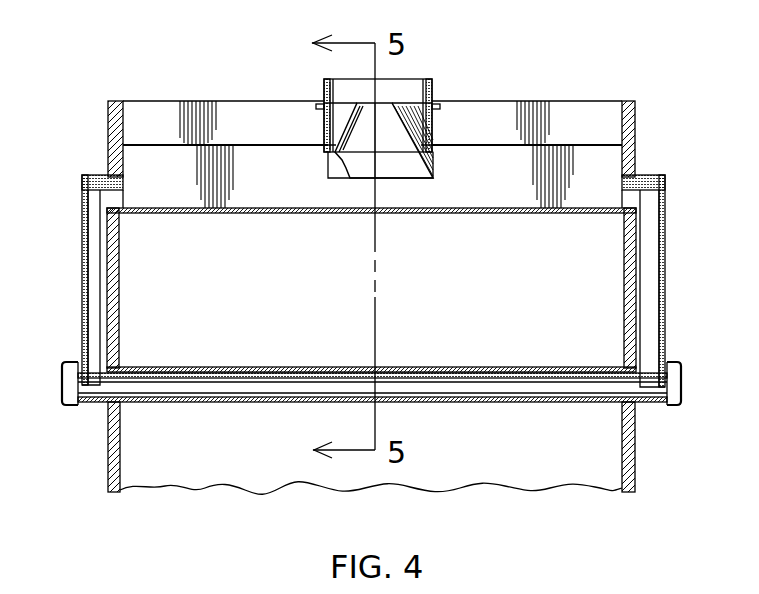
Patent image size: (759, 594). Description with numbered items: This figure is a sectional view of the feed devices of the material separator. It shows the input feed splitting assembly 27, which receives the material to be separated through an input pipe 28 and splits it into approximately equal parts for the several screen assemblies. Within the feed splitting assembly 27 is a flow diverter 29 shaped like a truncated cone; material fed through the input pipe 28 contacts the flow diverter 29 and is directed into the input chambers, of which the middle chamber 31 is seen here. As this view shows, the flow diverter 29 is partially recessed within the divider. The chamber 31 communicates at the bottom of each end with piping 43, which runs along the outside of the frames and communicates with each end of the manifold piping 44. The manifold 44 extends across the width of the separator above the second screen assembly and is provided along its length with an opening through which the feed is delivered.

The input feed splitting assembly 27 is at (447, 76).
The input pipe 28 is at (322, 92).
The flow diverter 29 is at (430, 172).
The input chamber 31 is at (373, 297).
The piping 43 is at (97, 262).
The manifold piping 44 is at (215, 388).